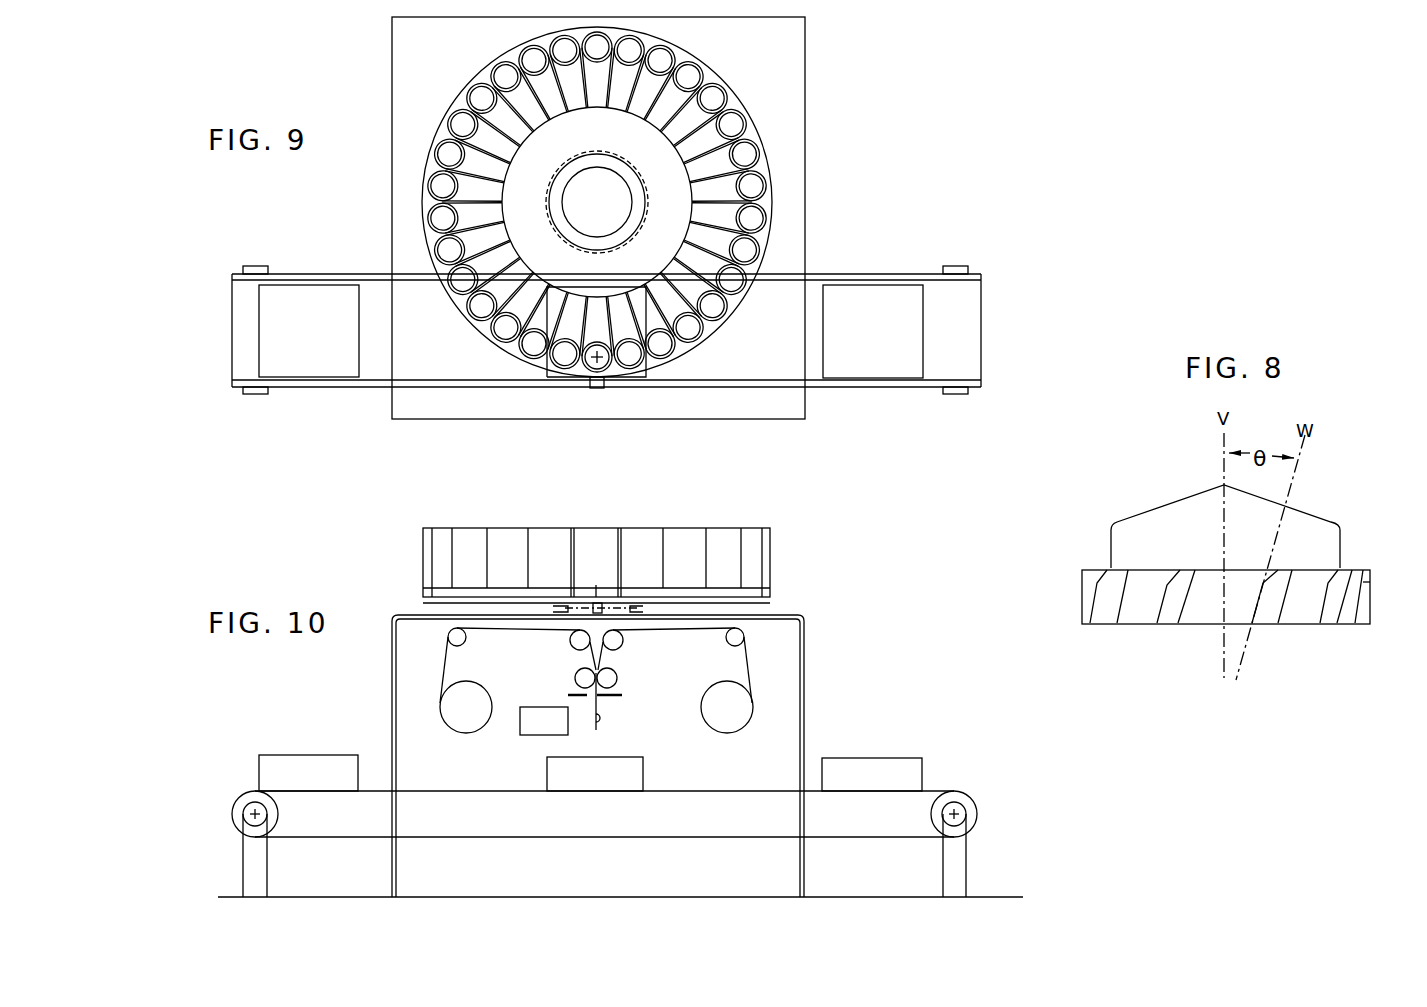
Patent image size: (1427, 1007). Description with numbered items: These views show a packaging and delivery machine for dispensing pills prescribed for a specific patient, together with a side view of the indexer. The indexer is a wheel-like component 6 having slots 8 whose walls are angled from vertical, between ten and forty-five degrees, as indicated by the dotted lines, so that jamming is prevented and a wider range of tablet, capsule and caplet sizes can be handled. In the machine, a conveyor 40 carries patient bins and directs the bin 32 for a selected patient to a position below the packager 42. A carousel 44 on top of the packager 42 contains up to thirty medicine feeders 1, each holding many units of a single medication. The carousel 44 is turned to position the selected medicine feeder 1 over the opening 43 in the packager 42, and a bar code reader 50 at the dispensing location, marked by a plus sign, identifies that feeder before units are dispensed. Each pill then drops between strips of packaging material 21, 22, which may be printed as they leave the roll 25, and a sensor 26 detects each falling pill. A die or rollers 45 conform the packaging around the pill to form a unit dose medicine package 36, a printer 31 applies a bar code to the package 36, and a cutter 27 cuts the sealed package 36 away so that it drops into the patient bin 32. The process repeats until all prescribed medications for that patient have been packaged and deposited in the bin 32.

In FIG. 9, the medicine feeder 1 is at (738, 367).
In FIG. 8, the cap 6 is at (1243, 513).
In FIG. 8, the slots 8 is at (1226, 632).
In FIG. 10, the packaging material strip 21 is at (518, 665).
In FIG. 10, the packaging material strip 22 is at (675, 680).
In FIG. 10, the roll 25 is at (494, 702).
In FIG. 10, the sensor 26 is at (492, 575).
In FIG. 10, the cutter 27 is at (638, 721).
In FIG. 10, the printer 31 is at (491, 737).
In FIG. 9, the container 32 is at (590, 364).
In FIG. 10, the container 32 is at (541, 749).
In FIG. 10, the unit dose medicine package 36 is at (539, 726).
In FIG. 9, the conveyor 40 is at (663, 330).
In FIG. 10, the conveyor 40 is at (657, 814).
In FIG. 9, the packager 42 is at (656, 218).
In FIG. 10, the packager 42 is at (650, 756).
In FIG. 10, the opening 43 is at (648, 555).
In FIG. 9, the carousel 44 is at (665, 202).
In FIG. 10, the carousel 44 is at (663, 565).
In FIG. 10, the rollers 45 is at (638, 686).
In FIG. 9, the bar code reader 50 is at (629, 421).